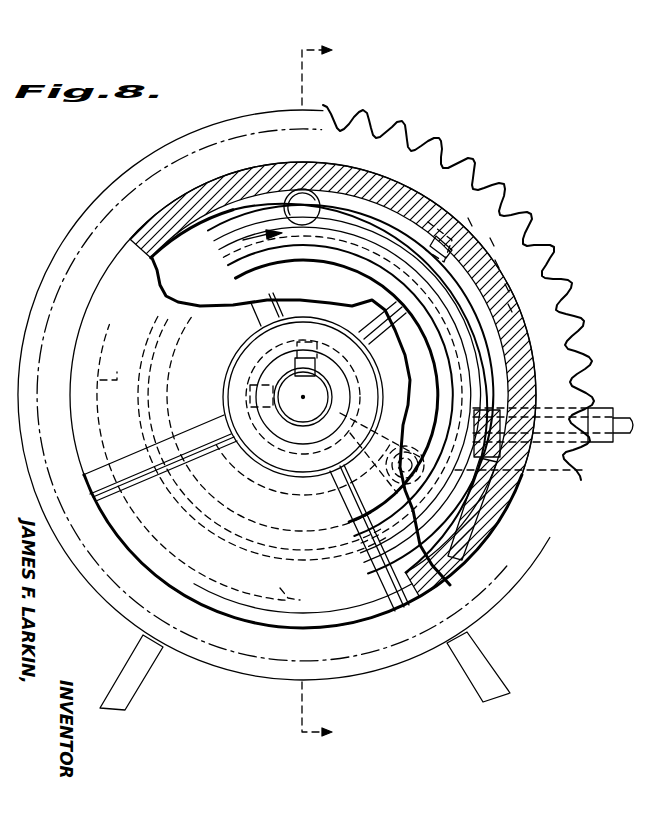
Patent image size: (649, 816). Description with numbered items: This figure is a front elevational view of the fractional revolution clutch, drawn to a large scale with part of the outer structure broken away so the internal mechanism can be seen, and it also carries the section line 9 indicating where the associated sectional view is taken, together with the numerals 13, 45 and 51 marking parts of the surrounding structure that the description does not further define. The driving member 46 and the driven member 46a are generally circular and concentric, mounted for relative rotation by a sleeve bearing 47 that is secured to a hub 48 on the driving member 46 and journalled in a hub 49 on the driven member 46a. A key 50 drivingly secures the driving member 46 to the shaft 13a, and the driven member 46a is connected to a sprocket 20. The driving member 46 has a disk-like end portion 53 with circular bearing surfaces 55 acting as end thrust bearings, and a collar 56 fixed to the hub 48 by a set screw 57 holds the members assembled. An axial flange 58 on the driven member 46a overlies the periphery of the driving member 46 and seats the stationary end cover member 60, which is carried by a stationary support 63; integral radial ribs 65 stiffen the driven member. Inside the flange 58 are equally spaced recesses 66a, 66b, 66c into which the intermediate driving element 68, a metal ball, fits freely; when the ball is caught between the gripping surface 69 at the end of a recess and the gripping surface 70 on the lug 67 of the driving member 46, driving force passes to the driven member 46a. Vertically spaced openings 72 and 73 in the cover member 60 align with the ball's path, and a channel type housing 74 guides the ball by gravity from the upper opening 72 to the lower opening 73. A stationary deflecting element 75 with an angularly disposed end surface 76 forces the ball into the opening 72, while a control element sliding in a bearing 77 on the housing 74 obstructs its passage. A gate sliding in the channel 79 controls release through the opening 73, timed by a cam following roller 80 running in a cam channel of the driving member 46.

The section line 9- 9 is at (302, 393).
The housing 13 is at (606, 374).
The shaft 13a is at (296, 409).
The sprocket 20 is at (448, 156).
The shaft end 45 is at (596, 440).
The driving member 46 is at (356, 260).
The driven member 46a is at (492, 242).
The sleeve bearing 47 is at (345, 506).
The hub 48 is at (303, 436).
The hub 49 is at (250, 397).
The key 50 is at (316, 366).
The pawl 51 is at (440, 222).
The disk-like end portion 53 is at (388, 480).
The circular bearing surfaces 55 is at (93, 486).
The collar 56 is at (246, 434).
The set screw 57 is at (312, 356).
The axial flange 58 is at (510, 308).
The stationary end cover member 60 is at (196, 238).
The stationary support 63 is at (126, 702).
The radial ribs 65 is at (255, 318).
The recess 66a is at (507, 288).
The recess 66b is at (490, 545).
The recess 66c is at (172, 548).
The lug or protuberance 67 is at (272, 232).
The intermediate driving element 68 is at (308, 200).
The gripping surface 69 is at (302, 226).
The gripping surface 70 is at (320, 214).
The opening 72 is at (470, 222).
The opening 73 is at (470, 520).
The channel type housing 74 is at (582, 470).
The stationary deflecting element 75 is at (497, 264).
The angularly disposed end surface 76 is at (500, 480).
The bearing 77 is at (582, 414).
The channel 79 is at (408, 440).
The cam following roller 80 is at (414, 444).